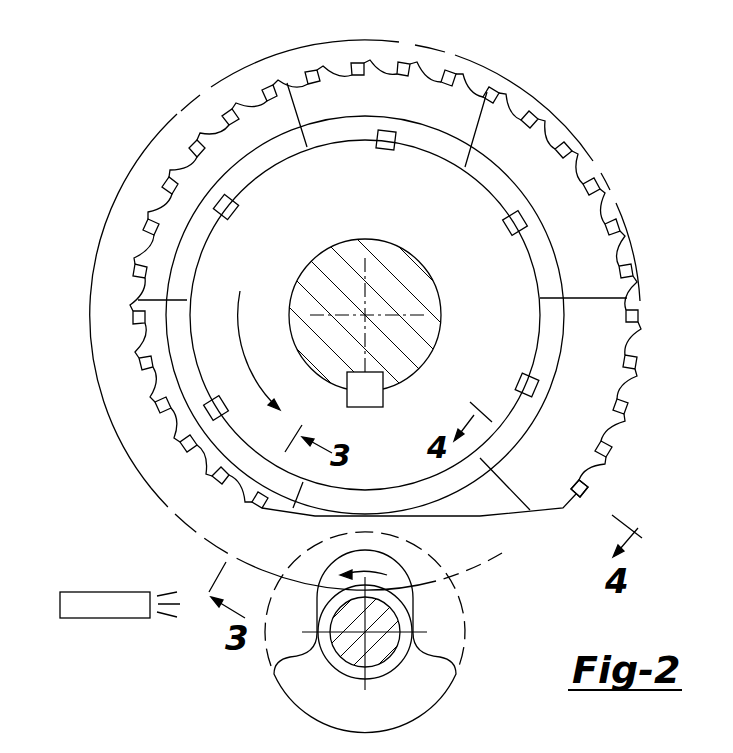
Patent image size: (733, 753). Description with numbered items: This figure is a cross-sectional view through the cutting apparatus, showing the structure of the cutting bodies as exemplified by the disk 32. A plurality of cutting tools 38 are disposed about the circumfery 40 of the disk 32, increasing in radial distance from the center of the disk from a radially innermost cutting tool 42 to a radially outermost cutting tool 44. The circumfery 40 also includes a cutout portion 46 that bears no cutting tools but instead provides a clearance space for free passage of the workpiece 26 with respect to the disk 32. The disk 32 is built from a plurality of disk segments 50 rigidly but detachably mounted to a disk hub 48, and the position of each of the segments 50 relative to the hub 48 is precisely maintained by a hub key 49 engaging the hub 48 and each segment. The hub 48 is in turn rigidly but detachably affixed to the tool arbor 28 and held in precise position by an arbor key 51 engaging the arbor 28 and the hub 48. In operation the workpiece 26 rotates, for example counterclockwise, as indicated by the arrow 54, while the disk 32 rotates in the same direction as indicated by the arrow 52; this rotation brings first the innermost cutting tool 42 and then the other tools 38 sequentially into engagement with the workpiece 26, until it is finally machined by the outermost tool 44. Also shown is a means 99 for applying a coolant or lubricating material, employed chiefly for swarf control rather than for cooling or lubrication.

The workpiece 26 is at (456, 674).
The tool arbor 28 is at (421, 342).
The disk 32 is at (140, 212).
The cutting tools 38 is at (140, 363).
The circumfery 40 is at (180, 173).
The radially innermost cutting tool 42 is at (258, 505).
The radially outermost cutting tool 44 is at (585, 491).
The cutout portion 46 is at (510, 503).
The disk hub 48 is at (465, 207).
The hub key 49 is at (234, 210).
The disk segments 50 is at (263, 117).
The arbor key 51 is at (383, 393).
The arrow 52 is at (241, 338).
The arrow 54 is at (377, 567).
The means for applying a coolant or lubricating material 99 is at (130, 618).